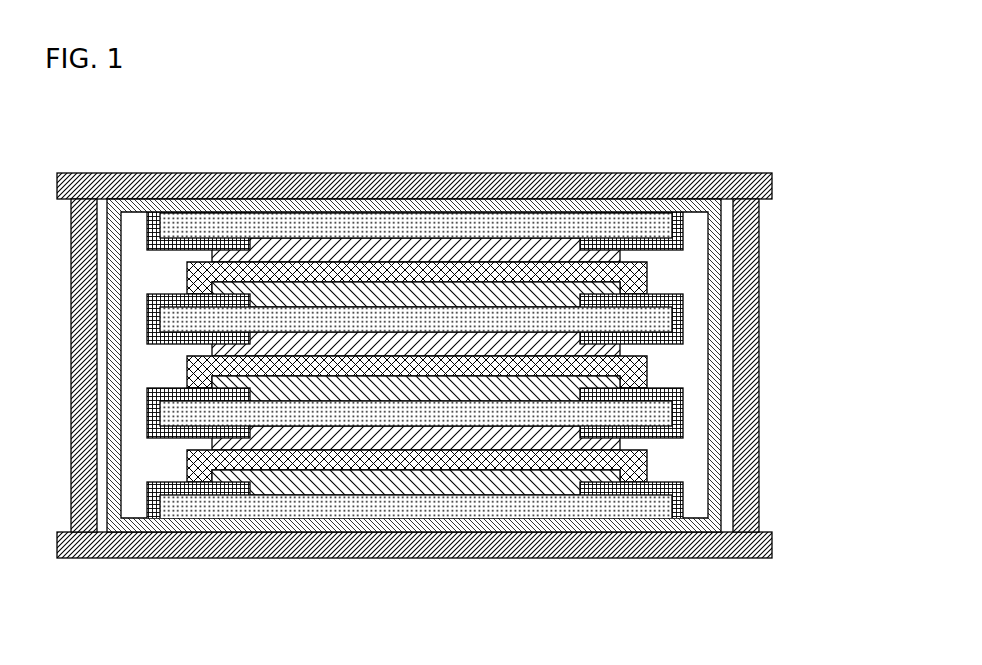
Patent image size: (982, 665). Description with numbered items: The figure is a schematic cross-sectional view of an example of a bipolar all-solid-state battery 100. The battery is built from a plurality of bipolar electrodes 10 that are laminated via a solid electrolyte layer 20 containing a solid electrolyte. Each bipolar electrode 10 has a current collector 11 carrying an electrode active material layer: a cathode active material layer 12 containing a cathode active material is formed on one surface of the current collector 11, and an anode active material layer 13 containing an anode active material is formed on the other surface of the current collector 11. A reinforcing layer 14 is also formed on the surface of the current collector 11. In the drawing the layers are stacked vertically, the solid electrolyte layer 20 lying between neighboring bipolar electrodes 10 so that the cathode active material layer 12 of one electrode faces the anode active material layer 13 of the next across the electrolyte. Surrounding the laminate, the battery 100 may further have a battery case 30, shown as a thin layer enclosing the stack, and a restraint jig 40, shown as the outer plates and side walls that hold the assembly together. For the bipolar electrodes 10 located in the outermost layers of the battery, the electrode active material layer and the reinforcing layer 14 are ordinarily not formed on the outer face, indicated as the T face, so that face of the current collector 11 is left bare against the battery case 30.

The bipolar all-solid-state battery 100 is at (470, 347).
The bipolar electrode 10 is at (515, 366).
The current collector 11 is at (623, 320).
The cathode active material layer 12 is at (593, 350).
The anode active material layer 13 is at (593, 290).
The reinforcing layer 14 is at (683, 337).
The solid electrolyte layer 20 is at (647, 380).
The battery case 30 is at (494, 347).
The restraint jig 40 is at (748, 497).
The T face T is at (472, 211).